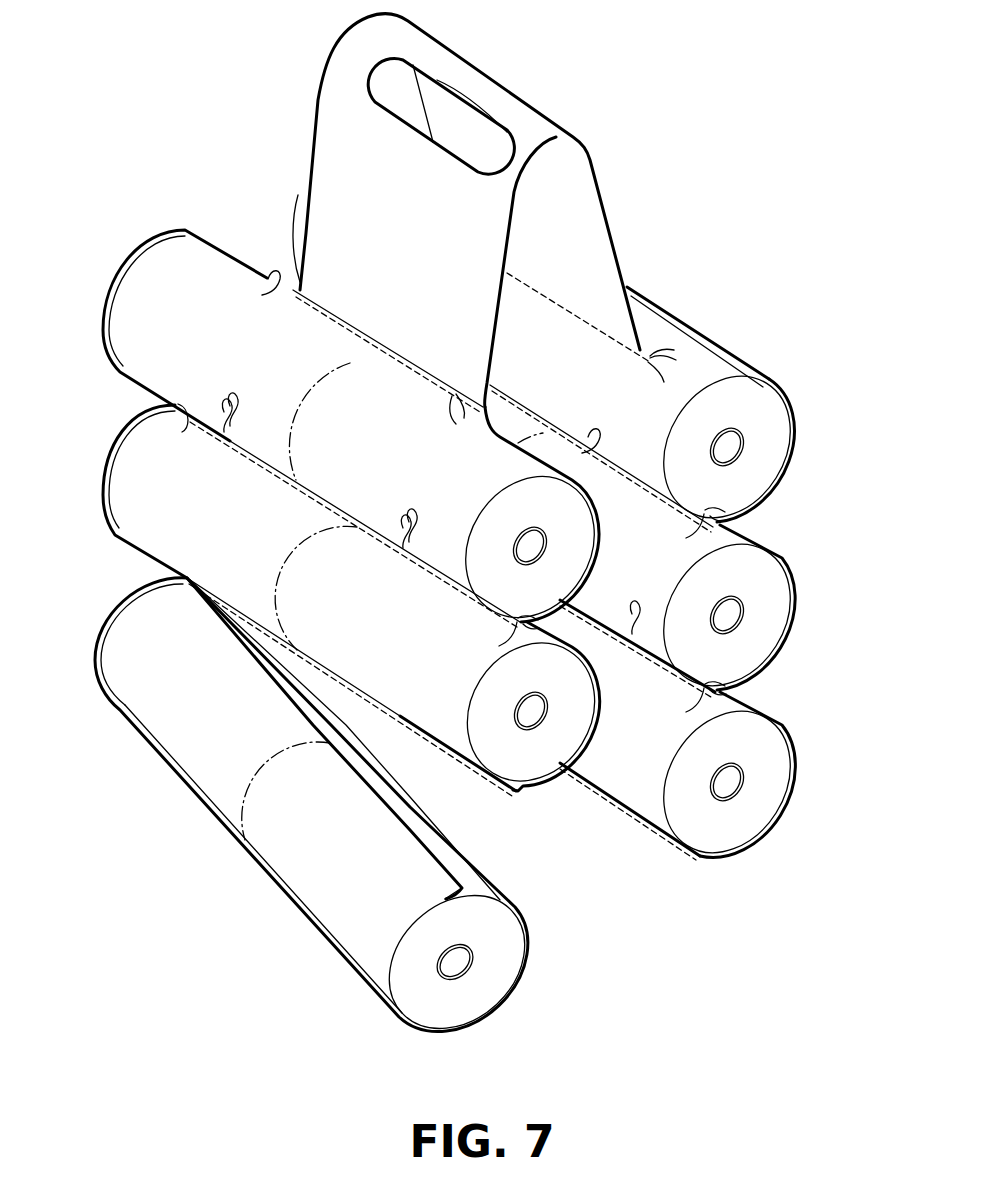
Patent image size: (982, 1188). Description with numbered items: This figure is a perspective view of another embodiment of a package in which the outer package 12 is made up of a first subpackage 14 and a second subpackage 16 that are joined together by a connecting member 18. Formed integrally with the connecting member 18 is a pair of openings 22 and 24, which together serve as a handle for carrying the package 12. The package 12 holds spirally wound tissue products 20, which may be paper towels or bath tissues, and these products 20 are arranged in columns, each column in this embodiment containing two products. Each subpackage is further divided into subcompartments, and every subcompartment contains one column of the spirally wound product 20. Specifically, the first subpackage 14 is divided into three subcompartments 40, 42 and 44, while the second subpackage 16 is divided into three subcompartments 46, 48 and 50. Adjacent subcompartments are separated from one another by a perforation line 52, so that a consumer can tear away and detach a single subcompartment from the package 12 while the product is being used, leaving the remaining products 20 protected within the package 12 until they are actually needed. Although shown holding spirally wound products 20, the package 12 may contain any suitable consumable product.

The outer package 12 is at (715, 360).
The first subpackage 14 is at (155, 532).
The second subpackage 16 is at (780, 558).
The connecting member 18 is at (340, 140).
The spirally wound tissue products 20 is at (745, 815).
The opening 22 is at (390, 75).
The opening 24 is at (527, 94).
The subcompartment 40 is at (140, 273).
The subcompartment 42 is at (140, 440).
The subcompartment 44 is at (160, 718).
The subcompartment 46 is at (785, 468).
The subcompartment 48 is at (780, 640).
The subcompartment 50 is at (790, 737).
The perforation line 52 is at (482, 405).